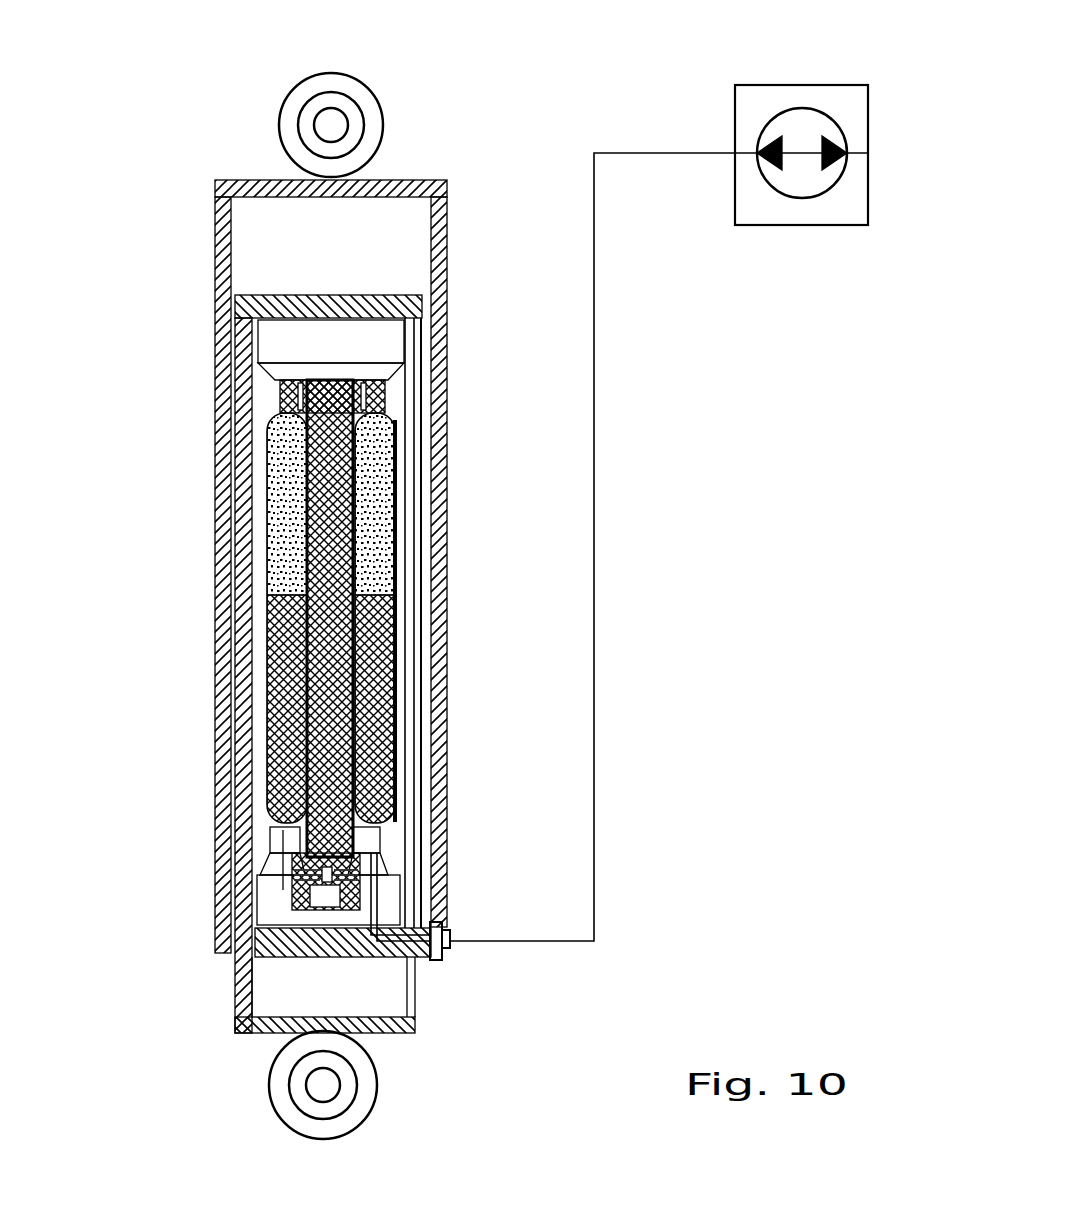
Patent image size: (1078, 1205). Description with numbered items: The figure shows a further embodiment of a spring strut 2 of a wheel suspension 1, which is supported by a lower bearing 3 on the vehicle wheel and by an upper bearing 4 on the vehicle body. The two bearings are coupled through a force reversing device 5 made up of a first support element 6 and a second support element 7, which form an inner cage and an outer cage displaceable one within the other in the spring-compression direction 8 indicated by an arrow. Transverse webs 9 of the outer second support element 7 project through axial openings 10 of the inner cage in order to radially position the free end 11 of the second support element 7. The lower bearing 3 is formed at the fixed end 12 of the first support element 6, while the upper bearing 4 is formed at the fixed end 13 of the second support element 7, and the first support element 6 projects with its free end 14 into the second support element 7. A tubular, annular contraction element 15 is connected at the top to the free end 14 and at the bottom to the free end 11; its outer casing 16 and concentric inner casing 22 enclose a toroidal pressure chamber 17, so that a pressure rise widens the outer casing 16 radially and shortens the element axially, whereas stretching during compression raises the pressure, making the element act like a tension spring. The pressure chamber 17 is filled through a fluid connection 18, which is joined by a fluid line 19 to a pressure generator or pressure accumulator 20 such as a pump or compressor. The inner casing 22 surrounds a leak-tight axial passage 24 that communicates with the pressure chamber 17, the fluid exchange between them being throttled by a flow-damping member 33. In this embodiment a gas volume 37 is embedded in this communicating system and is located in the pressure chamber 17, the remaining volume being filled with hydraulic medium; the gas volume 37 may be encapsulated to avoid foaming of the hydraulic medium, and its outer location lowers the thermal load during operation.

The wheel suspension 1 is at (105, 79).
The spring strut 2 is at (190, 483).
The lower bearing 3 is at (327, 1085).
The upper bearing 4 is at (332, 125).
The force reversing device 5 is at (207, 739).
The first support element 6 is at (233, 990).
The second support element 7 is at (440, 348).
The spring-compression direction 8 is at (191, 627).
The transverse webs 9 is at (415, 962).
The axial openings 10 is at (408, 1003).
The free end of the second support element 11 is at (300, 940).
The fixed end of the first support element 12 is at (265, 1022).
The fixed end of the second support element 13 is at (398, 187).
The free end of the first support element 14 is at (240, 303).
The contraction element 15 is at (420, 505).
The casing 16 is at (393, 598).
The pressure chamber 17 is at (385, 455).
The fluid connection 18 is at (442, 920).
The fluid line 19 is at (594, 385).
The pressure generator or pressure accumulator 20 is at (848, 97).
The inner casing 22 is at (396, 558).
The axial passage 24 is at (322, 545).
The flow-damping member 33 is at (317, 898).
The gas volume 37 is at (278, 472).